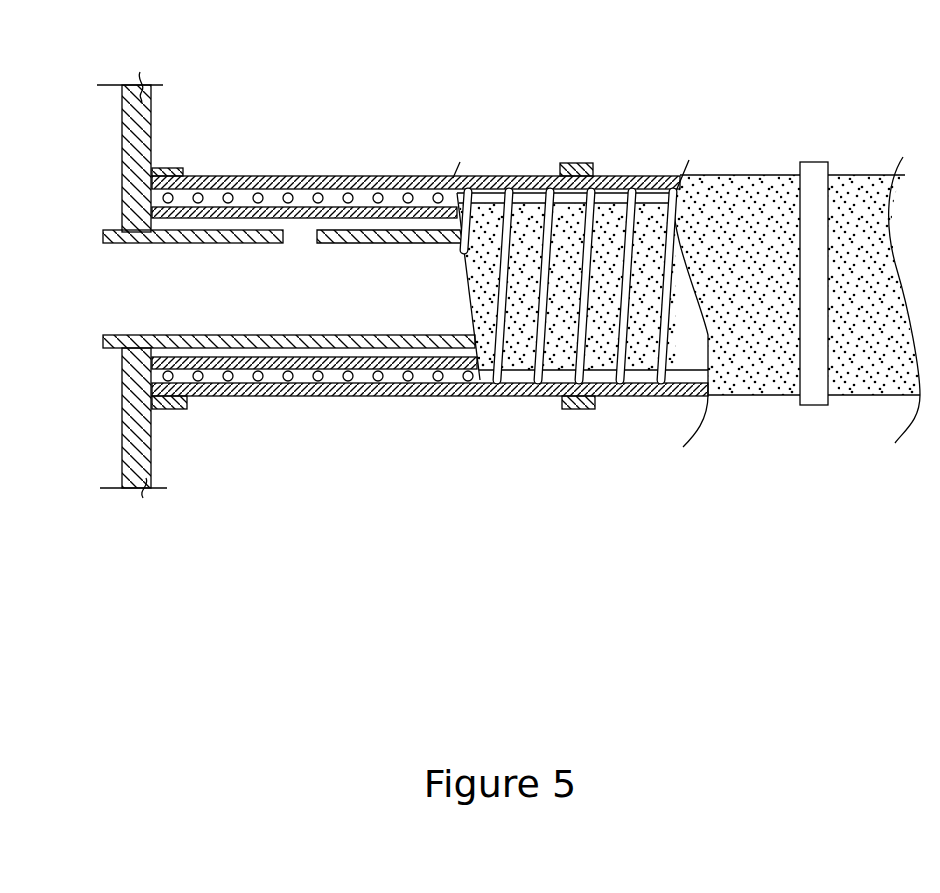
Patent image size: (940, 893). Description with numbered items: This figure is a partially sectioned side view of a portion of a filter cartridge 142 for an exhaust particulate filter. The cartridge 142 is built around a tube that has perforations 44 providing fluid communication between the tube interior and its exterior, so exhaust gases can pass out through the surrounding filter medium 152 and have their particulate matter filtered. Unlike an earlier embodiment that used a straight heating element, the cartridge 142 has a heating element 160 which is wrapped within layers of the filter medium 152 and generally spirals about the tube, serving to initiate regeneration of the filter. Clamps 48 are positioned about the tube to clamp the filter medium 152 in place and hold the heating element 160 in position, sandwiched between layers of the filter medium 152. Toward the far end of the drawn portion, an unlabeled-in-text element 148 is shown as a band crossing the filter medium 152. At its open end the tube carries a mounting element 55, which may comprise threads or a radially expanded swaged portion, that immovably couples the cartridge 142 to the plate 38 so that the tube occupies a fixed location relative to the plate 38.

The filter cartridge 142 is at (404, 96).
The end stop 148 is at (830, 163).
The filter medium 152 is at (253, 397).
The heating element 160 is at (331, 397).
The clamps 48 is at (183, 168).
The perforations 44 is at (318, 236).
The mounting element 55 is at (140, 228).
The plate 38 is at (152, 444).